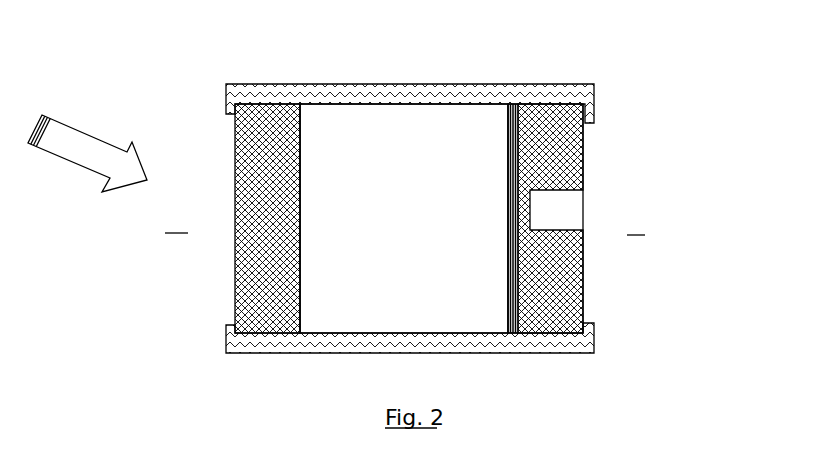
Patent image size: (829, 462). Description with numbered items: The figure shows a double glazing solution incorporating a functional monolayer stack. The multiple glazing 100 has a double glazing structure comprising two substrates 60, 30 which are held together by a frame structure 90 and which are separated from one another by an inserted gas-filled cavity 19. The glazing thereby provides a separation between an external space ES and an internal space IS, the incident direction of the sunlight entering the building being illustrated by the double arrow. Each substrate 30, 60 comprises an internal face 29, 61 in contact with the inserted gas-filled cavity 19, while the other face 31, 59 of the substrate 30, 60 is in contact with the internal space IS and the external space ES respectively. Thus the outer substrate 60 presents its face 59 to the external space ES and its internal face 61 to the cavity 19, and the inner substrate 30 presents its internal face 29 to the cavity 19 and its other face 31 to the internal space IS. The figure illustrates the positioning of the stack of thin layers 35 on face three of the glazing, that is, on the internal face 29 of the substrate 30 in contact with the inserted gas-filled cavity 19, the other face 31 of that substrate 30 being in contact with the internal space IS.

The multiple glazing 100 is at (145, 95).
The frame structure 90 is at (300, 104).
The substrate 60 is at (263, 318).
The face of the substrate 59 is at (235, 310).
The internal face 61 is at (300, 280).
The inserted gas-filled cavity 19 is at (439, 223).
The internal face 29 is at (510, 300).
The stack of thin layers 35 is at (513, 333).
The substrate 30 is at (560, 221).
The face of the substrate 31 is at (583, 275).